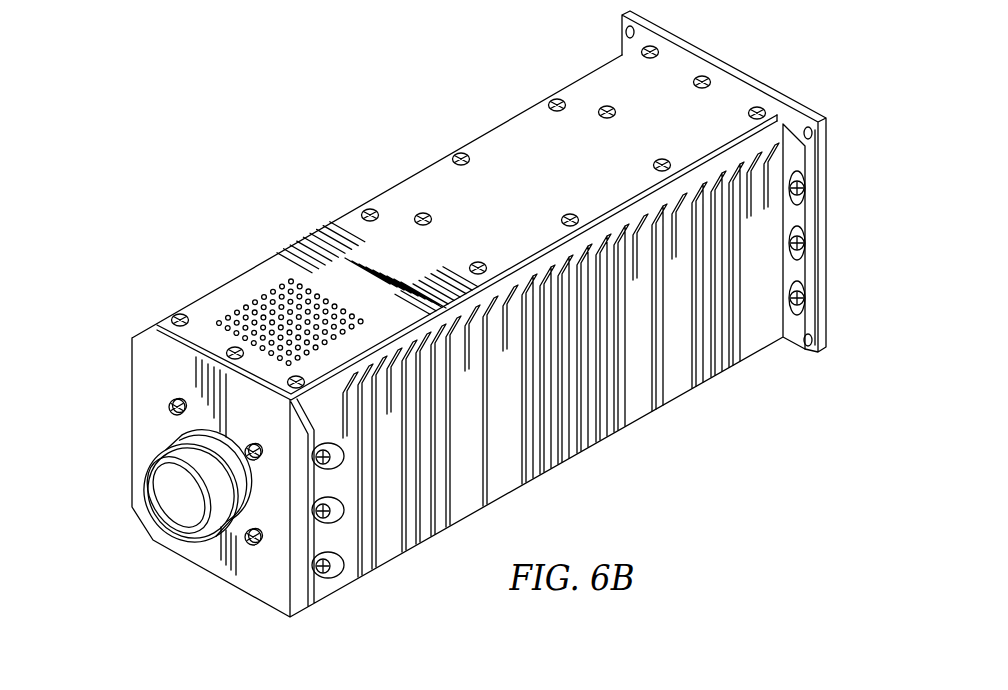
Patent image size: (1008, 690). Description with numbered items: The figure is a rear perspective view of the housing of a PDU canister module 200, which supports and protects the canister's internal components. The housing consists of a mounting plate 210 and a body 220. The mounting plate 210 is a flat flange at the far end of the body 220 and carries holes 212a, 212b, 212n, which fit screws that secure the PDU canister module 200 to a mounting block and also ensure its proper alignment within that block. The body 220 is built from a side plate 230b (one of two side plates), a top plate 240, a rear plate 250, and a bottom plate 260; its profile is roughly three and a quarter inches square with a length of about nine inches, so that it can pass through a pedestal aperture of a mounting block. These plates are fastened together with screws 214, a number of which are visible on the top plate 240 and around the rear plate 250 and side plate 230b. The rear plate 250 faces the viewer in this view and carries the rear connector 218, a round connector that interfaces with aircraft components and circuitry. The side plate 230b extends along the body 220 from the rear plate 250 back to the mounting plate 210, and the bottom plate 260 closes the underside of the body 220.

The PDU canister module 200 is at (236, 190).
The mounting plate 210 is at (718, 66).
The hole 212n is at (624, 33).
The hole 212a is at (806, 127).
The hole 212b is at (806, 348).
The screws 214 is at (558, 116).
The rear connector 218 is at (150, 452).
The body 220 is at (561, 360).
The side plate 230b is at (632, 389).
The top plate 240 is at (410, 179).
The rear plate 250 is at (158, 378).
The bottom plate 260 is at (386, 573).